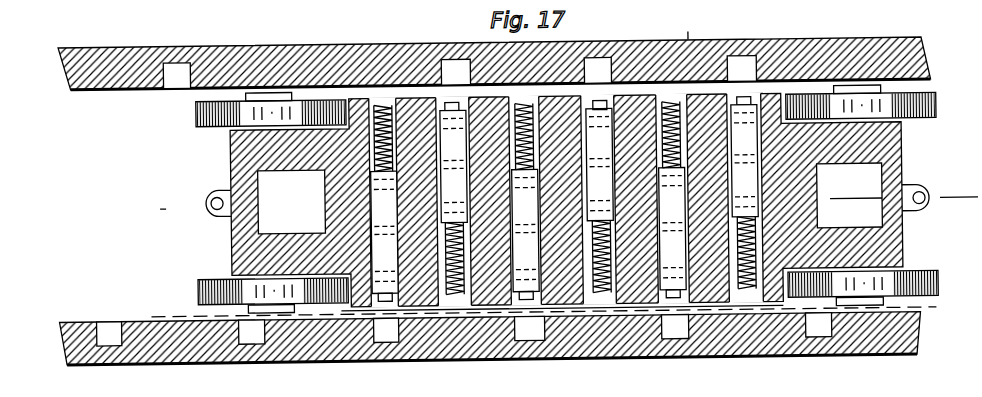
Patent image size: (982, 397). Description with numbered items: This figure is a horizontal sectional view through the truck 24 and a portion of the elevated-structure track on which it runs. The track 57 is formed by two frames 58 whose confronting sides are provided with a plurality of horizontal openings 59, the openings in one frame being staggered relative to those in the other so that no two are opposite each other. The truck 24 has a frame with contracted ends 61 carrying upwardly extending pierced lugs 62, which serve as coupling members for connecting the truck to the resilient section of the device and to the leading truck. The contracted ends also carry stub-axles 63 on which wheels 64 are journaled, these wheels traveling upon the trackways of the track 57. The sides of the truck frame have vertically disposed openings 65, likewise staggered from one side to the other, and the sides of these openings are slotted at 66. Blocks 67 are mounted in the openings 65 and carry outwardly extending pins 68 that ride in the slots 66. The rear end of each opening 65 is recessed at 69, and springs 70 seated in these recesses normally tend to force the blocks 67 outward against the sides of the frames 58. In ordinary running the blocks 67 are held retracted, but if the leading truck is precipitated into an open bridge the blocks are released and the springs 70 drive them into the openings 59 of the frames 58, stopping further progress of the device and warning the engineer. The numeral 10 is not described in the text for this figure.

The section line 10 is at (560, 250).
The truck 24 is at (152, 207).
The track 57 is at (690, 25).
The frames 58 is at (90, 85).
The horizontal openings 59 is at (180, 77).
The contracted ends 61 is at (233, 234).
The pierced lugs 62 is at (213, 210).
The stub-axles 63 is at (230, 139).
The wheels 64 is at (213, 122).
The vertically-disposed openings 65 is at (587, 98).
The slots 66 is at (323, 218).
The blocks 67 is at (529, 235).
The pins 68 is at (489, 166).
The recesses 69 is at (752, 303).
The springs 70 is at (458, 292).